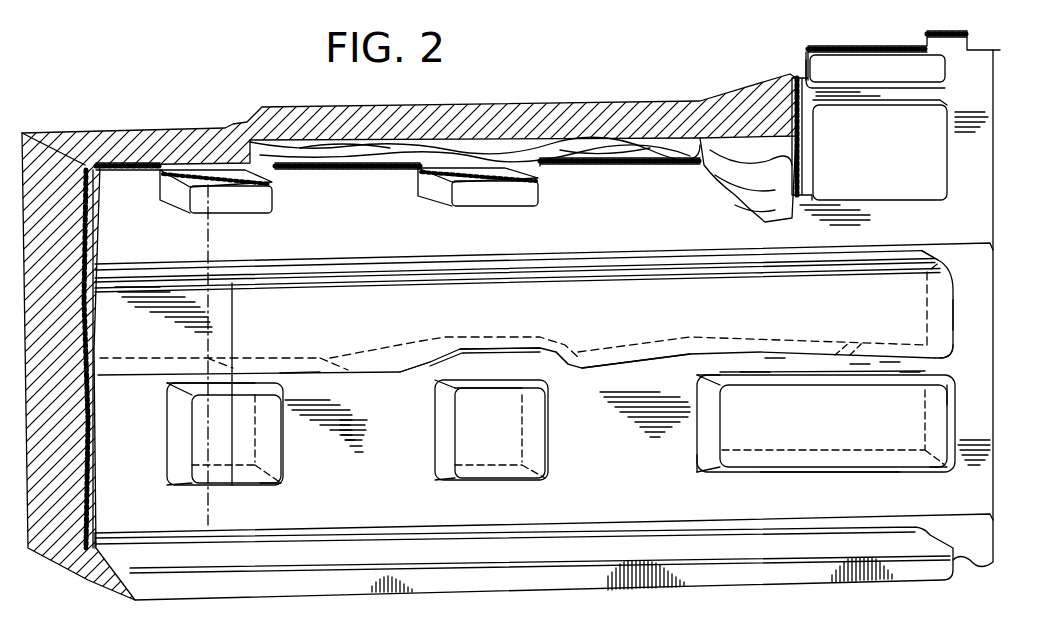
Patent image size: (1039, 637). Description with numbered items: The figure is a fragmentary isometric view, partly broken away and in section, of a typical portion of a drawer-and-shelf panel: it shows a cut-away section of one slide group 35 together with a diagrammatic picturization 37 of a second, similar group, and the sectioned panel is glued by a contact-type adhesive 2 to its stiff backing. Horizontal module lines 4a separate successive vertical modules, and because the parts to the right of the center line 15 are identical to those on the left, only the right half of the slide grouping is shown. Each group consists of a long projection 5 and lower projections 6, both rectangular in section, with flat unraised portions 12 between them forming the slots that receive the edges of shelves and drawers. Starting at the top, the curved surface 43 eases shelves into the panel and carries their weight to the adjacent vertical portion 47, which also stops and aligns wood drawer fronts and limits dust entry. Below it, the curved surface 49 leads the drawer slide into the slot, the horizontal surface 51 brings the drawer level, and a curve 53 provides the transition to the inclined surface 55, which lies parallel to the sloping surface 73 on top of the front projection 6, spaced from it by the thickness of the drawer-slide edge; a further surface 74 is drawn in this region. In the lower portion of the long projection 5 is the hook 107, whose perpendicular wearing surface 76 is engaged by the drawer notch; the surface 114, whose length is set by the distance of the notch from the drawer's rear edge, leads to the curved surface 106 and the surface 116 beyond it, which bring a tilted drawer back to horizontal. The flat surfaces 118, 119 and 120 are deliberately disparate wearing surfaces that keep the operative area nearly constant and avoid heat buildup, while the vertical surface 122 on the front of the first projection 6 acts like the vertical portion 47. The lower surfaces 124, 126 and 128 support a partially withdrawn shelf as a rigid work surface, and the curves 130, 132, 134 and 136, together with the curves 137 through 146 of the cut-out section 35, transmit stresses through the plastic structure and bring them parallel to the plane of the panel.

The contact-type adhesive 2 is at (660, 150).
The module lines 4a is at (990, 243).
The long projection 5 is at (808, 62).
The projections 6 is at (240, 215).
The flat unraised portions 12 is at (168, 383).
The centerline 15 is at (205, 222).
The slide group 35 is at (873, 48).
The diagrammatic picturization of second slide group 37 is at (958, 310).
The curved surface 43 is at (938, 260).
The vertical portion 47 is at (953, 318).
The curved surface 49 is at (945, 355).
The horizontal surface 51 is at (890, 364).
The curve 53 is at (832, 352).
The inclined surface 55 is at (774, 360).
The sloping surface 73 is at (912, 374).
The web 74 is at (858, 366).
The perpendicular surface 76 is at (562, 366).
The curved surface 106 is at (420, 369).
The hook 107 is at (605, 366).
The surface 114 is at (482, 349).
The surface 116 is at (300, 373).
The flat surface 118 is at (745, 372).
The flat surface 119 is at (478, 386).
The flat surface 120 is at (215, 390).
The vertical surface 122 is at (955, 425).
The lower surface 124 is at (800, 472).
The lower surface 126 is at (478, 481).
The lower surface 128 is at (278, 480).
The curve 130 is at (950, 395).
The curve 132 is at (700, 378).
The curve 134 is at (700, 470).
The curve 136 is at (945, 468).
The curve 137 is at (808, 95).
The curve 146 is at (800, 115).